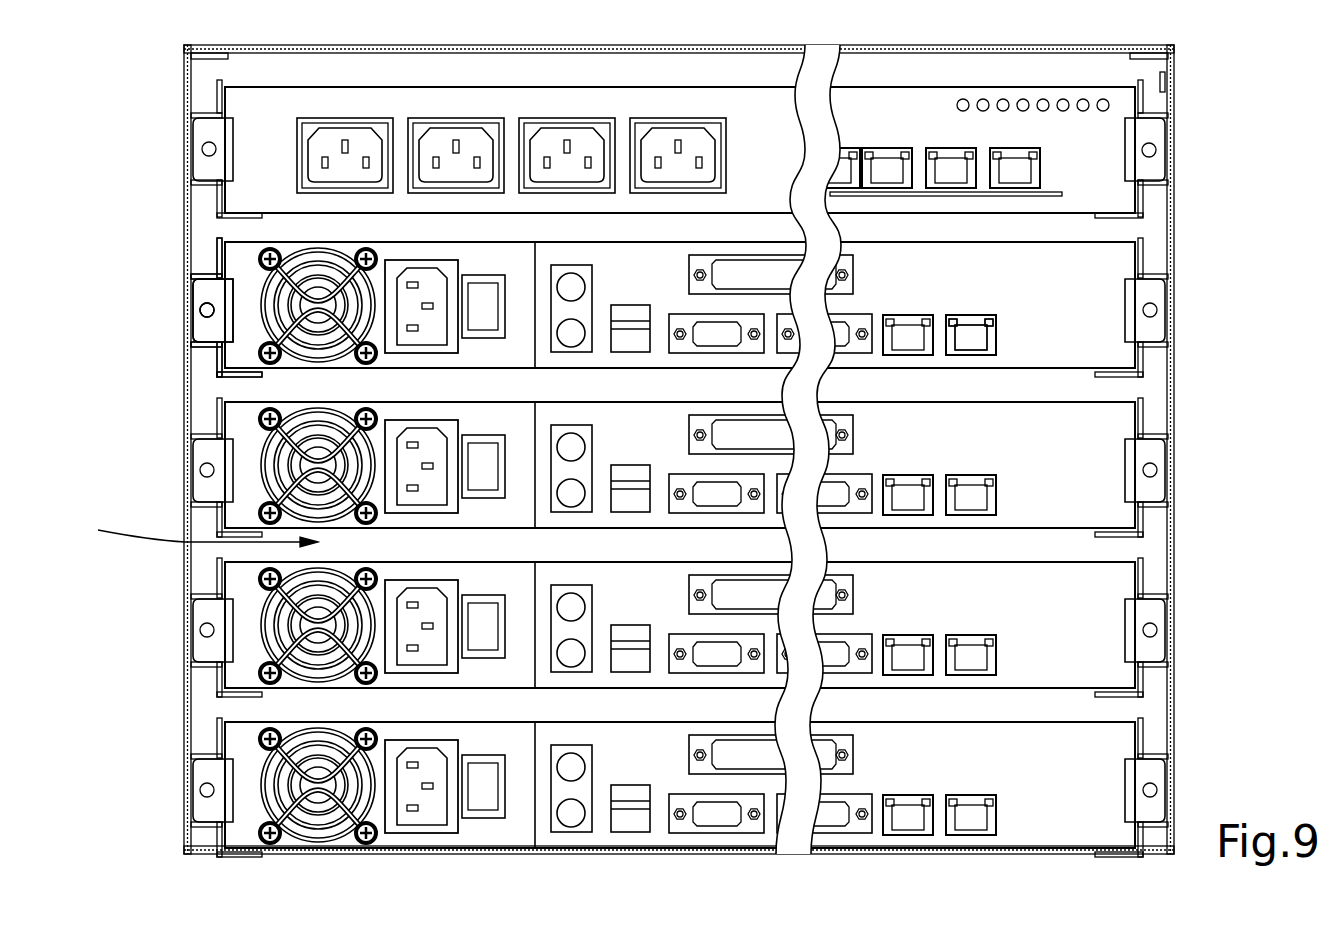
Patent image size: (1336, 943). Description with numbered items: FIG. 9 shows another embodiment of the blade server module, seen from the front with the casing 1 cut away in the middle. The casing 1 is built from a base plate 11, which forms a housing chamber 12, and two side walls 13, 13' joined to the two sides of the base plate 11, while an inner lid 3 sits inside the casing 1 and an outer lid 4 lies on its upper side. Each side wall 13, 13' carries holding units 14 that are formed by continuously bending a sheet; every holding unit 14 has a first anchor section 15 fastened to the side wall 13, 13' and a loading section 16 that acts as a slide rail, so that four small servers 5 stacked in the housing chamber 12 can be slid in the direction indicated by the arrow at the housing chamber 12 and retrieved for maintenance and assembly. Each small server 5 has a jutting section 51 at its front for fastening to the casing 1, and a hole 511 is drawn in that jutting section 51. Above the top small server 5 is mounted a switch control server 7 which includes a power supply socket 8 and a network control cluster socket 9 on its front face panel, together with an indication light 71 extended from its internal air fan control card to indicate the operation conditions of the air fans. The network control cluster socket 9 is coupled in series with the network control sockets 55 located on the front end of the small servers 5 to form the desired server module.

The casing 1 is at (700, 445).
The inner lid 3 is at (460, 47).
The outer lid 4 is at (517, 47).
The small server 5 is at (671, 312).
The switch control server 7 is at (707, 120).
The power supply socket 8 is at (590, 128).
The network control cluster socket 9 is at (937, 152).
The base plate 11 is at (632, 852).
The housing chamber 12 is at (189, 530).
The side wall 13 is at (153, 449).
The side wall 13' is at (1232, 449).
The holding unit 14 is at (1152, 108).
The first anchor section 15 is at (1170, 152).
The loading section 16 is at (1120, 218).
The jutting section 51 is at (185, 307).
The screw hole 511 is at (204, 308).
The network control socket 55 is at (997, 335).
The indication light 71 is at (963, 99).